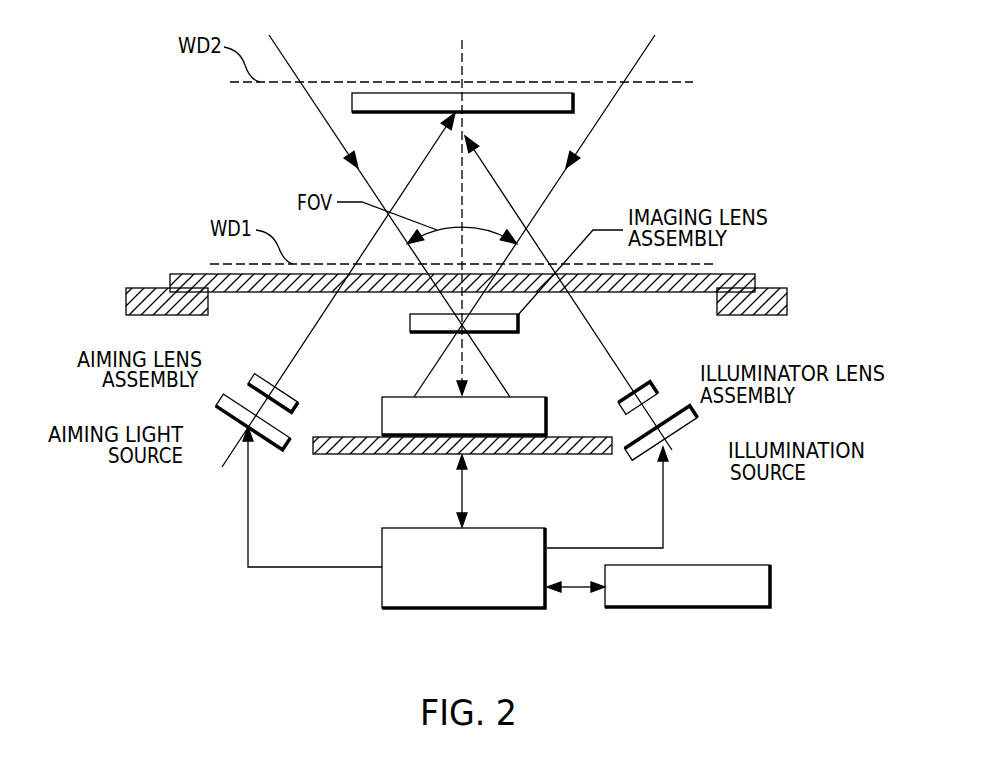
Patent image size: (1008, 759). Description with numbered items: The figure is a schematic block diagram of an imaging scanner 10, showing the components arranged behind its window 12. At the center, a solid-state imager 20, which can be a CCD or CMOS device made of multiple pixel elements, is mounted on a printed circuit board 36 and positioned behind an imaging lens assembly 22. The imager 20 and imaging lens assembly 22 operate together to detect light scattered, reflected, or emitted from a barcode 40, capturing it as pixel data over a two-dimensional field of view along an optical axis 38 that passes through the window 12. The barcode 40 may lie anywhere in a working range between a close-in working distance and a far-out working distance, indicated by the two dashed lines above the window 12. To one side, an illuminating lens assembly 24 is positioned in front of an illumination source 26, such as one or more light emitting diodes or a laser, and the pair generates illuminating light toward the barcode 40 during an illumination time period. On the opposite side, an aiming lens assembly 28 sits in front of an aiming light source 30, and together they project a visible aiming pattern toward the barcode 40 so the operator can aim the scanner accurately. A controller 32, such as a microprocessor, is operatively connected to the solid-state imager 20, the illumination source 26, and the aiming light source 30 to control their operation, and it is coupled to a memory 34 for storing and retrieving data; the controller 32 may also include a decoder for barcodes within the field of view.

The imaging scanner 10 is at (648, 150).
The window 12 is at (200, 273).
The solid-state imager 20 is at (382, 415).
The imaging lens assembly 22 is at (410, 322).
The illuminating lens assembly 24 is at (653, 391).
The illumination source 26 is at (685, 432).
The aiming lens assembly 28 is at (253, 377).
The aiming light source 30 is at (231, 417).
The controller 32 is at (382, 547).
The memory 34 is at (771, 587).
The printed circuit board 36 is at (330, 456).
The optical axis 38 is at (462, 62).
The barcode 40 is at (390, 114).